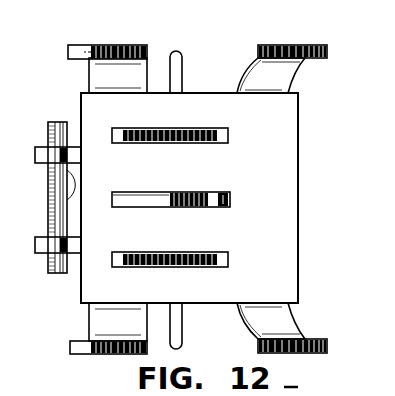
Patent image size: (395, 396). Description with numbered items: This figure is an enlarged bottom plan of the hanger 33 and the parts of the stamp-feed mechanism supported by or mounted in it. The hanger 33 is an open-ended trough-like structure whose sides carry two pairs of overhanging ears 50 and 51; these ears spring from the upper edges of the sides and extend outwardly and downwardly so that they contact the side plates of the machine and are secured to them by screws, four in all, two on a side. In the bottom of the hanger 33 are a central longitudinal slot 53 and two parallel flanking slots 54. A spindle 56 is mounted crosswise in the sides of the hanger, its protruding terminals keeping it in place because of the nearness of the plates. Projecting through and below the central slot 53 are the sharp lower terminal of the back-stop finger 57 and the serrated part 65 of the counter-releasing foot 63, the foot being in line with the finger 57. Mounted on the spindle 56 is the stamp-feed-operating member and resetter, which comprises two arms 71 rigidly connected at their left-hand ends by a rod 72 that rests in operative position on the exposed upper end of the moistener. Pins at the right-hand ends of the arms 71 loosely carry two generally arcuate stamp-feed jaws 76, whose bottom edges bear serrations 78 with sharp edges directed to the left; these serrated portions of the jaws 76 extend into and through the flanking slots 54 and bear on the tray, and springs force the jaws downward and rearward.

The hanger 33 is at (189, 198).
The overhanging ears 50 is at (112, 52).
The overhanging ears 51 is at (285, 52).
The central longitudinal slot 53 is at (191, 202).
The flanking slots 54 is at (228, 136).
The spindle 56 is at (183, 69).
The back-stop finger 57 is at (230, 200).
The counter-releasing foot 63 is at (126, 199).
The serrated part 65 is at (196, 207).
The arms 71 is at (38, 157).
The rod 72 is at (40, 243).
The stamp-feed jaws 76 is at (134, 130).
The serrations 78 is at (194, 130).